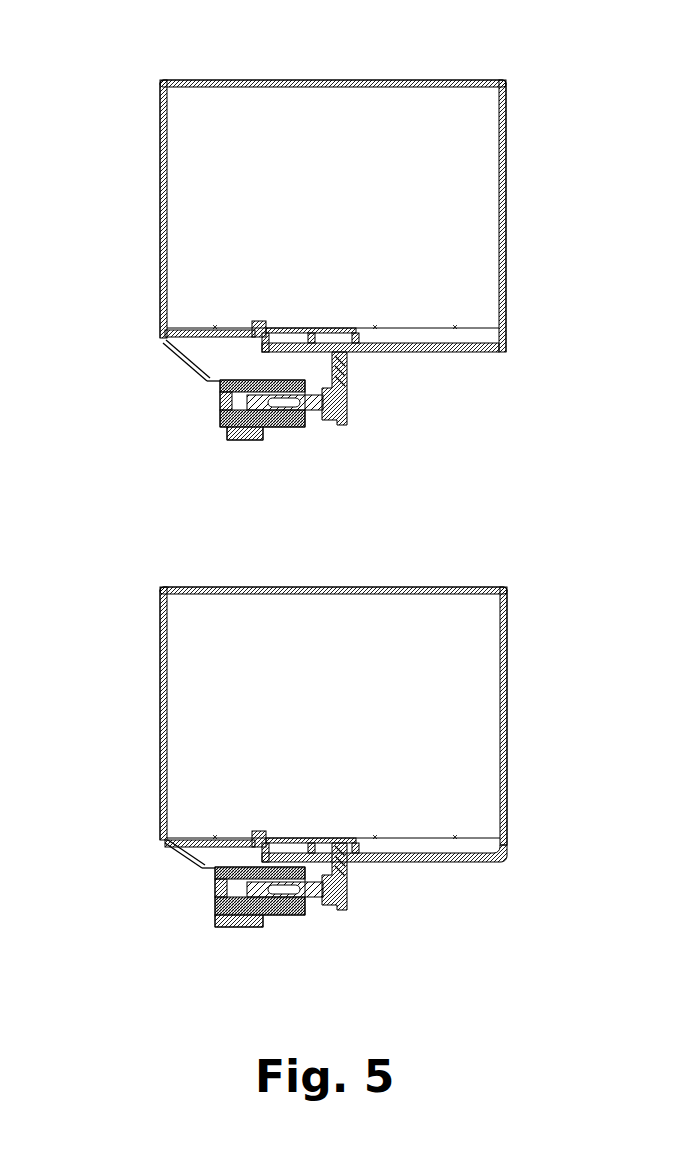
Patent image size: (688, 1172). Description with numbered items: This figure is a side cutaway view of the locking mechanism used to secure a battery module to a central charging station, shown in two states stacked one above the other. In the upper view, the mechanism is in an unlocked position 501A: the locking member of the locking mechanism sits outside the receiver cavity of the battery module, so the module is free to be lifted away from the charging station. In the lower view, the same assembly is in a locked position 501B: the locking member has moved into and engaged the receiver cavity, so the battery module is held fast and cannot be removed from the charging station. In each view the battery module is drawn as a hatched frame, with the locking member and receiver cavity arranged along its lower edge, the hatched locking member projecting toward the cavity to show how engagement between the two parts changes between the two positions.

The unlocked position 501A is at (105, 126).
The locked position 501B is at (119, 616).